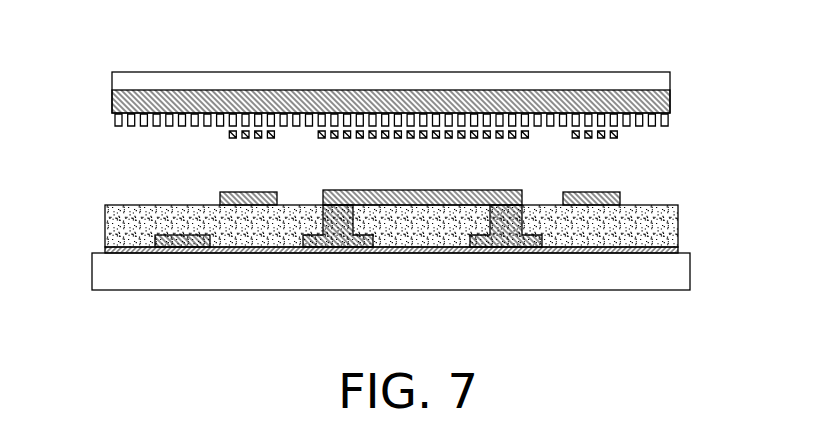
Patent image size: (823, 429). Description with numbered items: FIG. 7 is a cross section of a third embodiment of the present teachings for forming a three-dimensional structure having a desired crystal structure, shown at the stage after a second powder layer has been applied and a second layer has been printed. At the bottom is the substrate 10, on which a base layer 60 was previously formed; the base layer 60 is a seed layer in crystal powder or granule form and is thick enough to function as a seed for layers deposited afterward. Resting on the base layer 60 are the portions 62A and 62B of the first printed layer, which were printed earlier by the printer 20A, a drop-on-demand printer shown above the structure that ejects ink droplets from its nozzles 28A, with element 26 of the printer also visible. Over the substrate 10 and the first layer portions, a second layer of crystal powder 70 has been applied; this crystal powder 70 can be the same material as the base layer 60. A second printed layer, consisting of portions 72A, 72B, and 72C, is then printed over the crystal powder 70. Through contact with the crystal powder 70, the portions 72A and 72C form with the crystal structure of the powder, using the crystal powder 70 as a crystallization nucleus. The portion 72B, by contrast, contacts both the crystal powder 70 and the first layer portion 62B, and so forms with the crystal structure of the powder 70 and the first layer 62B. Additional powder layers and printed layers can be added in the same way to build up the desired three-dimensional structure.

The substrate 10 is at (92, 273).
The printer 20A is at (411, 97).
The interconnect structure 26 is at (229, 90).
The nozzles 28A is at (661, 127).
The base layer 60 is at (678, 248).
The portion of first layer 62A is at (184, 252).
The portion of first layer 62B is at (343, 252).
The second layer of crystal powder 70 is at (678, 227).
The portion of second printed layer 72A is at (250, 192).
The portion of second printed layer 72B is at (340, 192).
The portion of second printed layer 72C is at (600, 192).